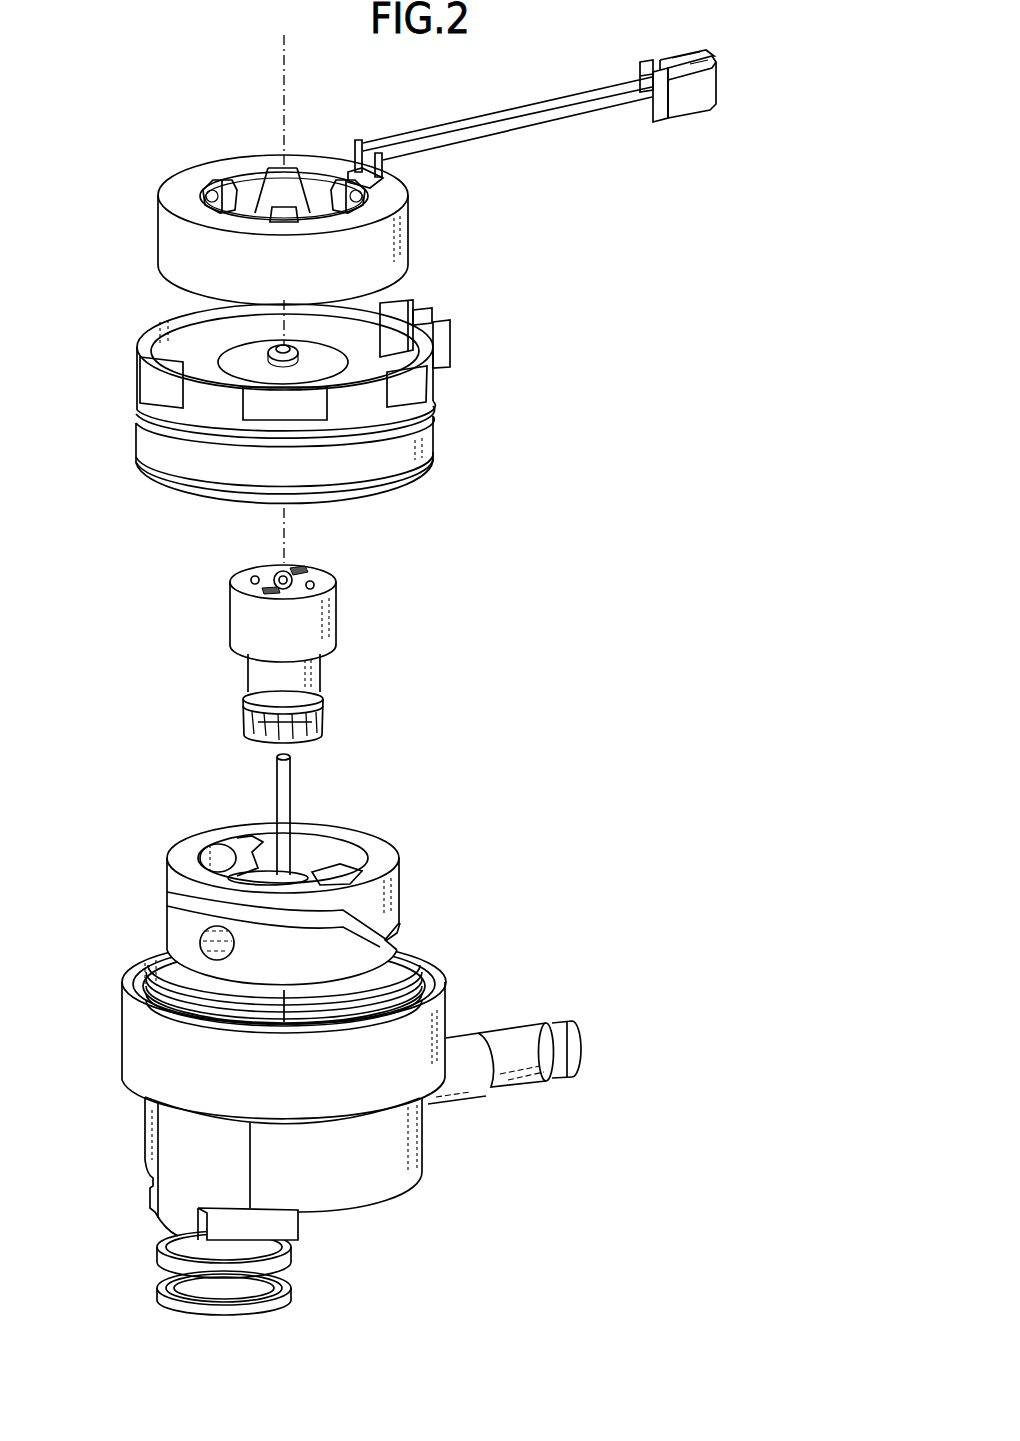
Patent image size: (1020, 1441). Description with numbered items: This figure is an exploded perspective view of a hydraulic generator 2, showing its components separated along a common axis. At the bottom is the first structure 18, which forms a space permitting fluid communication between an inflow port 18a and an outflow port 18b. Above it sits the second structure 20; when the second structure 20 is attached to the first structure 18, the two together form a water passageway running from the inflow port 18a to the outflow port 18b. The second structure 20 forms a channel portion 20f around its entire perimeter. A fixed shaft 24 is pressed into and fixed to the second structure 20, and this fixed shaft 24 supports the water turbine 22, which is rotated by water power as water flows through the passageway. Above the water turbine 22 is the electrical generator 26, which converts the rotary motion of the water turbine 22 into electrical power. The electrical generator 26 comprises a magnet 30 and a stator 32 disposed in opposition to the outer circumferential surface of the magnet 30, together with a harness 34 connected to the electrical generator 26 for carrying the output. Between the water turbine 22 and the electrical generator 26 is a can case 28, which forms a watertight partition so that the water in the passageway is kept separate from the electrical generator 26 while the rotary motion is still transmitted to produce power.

The hydraulic generator 2 is at (748, 194).
The first structure 18 is at (446, 1006).
The inflow port 18a is at (245, 1312).
The outflow port 18b is at (581, 1043).
The second structure 20 is at (388, 897).
The channel portion 20f is at (168, 892).
The water turbine 22 is at (324, 713).
The fixed shaft 24 is at (292, 790).
The electrical generator 26 is at (514, 156).
The can case 28 is at (437, 398).
The magnet 30 is at (324, 623).
The stator 32 is at (412, 224).
The harness 34 is at (446, 125).